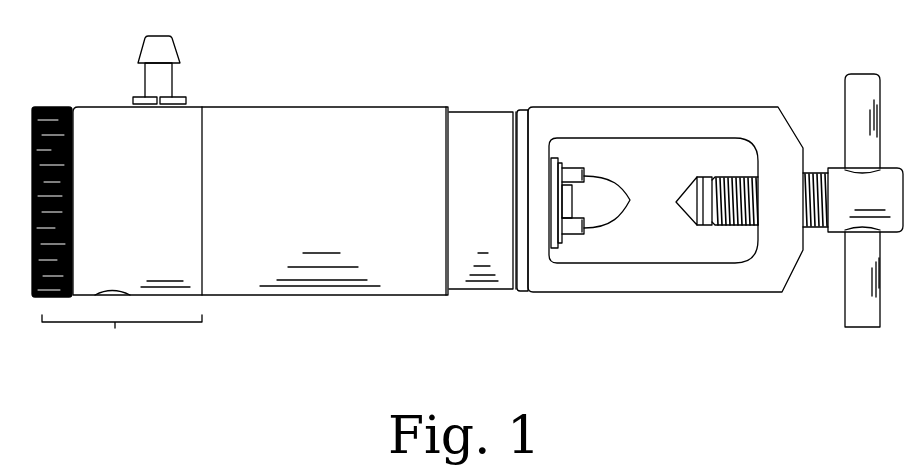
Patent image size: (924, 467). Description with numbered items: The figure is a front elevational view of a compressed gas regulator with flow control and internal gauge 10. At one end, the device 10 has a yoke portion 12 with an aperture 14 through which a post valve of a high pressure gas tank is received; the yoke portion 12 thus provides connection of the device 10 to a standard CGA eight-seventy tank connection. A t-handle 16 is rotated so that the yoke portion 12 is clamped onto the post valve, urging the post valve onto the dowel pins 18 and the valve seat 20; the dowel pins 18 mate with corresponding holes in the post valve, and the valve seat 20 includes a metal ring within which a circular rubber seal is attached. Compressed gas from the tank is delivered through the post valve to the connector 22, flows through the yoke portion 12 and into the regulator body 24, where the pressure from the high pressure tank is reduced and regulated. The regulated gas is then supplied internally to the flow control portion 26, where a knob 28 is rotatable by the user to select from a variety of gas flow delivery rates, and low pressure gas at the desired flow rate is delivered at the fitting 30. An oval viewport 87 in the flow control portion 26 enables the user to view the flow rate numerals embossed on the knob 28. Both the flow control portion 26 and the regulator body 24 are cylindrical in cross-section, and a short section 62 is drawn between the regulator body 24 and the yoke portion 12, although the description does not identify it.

The compressed gas regulator with flow control and internal gauge 10 is at (367, 58).
The yoke portion 12 is at (625, 294).
The aperture 14 is at (656, 253).
The t-handle 16 is at (847, 310).
The dowel pins 18 is at (626, 202).
The valve seat 20 is at (565, 172).
The connector 22 is at (571, 199).
The regulator body 24 is at (359, 296).
The flow control portion 26 is at (122, 338).
The knob 28 is at (50, 297).
The fitting 30 is at (162, 41).
The collar 62 is at (487, 291).
The viewport 87 is at (107, 291).